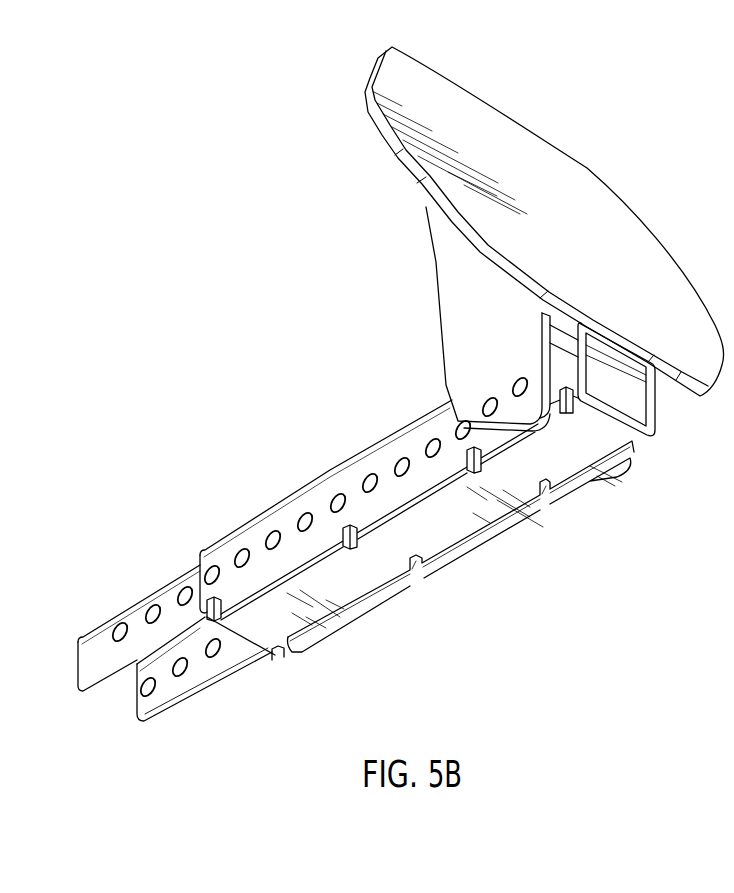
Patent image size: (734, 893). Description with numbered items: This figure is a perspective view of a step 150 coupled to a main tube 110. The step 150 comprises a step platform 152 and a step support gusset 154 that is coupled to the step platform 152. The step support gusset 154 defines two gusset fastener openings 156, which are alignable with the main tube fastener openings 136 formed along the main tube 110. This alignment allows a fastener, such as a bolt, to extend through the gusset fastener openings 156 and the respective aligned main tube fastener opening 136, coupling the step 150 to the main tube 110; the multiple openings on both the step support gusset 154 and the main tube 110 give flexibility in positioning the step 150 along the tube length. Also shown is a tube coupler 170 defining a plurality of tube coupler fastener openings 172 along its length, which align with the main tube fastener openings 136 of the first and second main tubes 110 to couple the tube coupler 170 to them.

The main tube 110 is at (408, 508).
The main tube fastener openings 136 is at (304, 513).
The step 150 is at (538, 232).
The step platform 152 is at (658, 232).
The step support gusset 154 is at (503, 320).
The gusset fastener openings 156 is at (515, 378).
The tube coupler 170 is at (159, 611).
The tube coupler fastener openings 172 is at (183, 589).